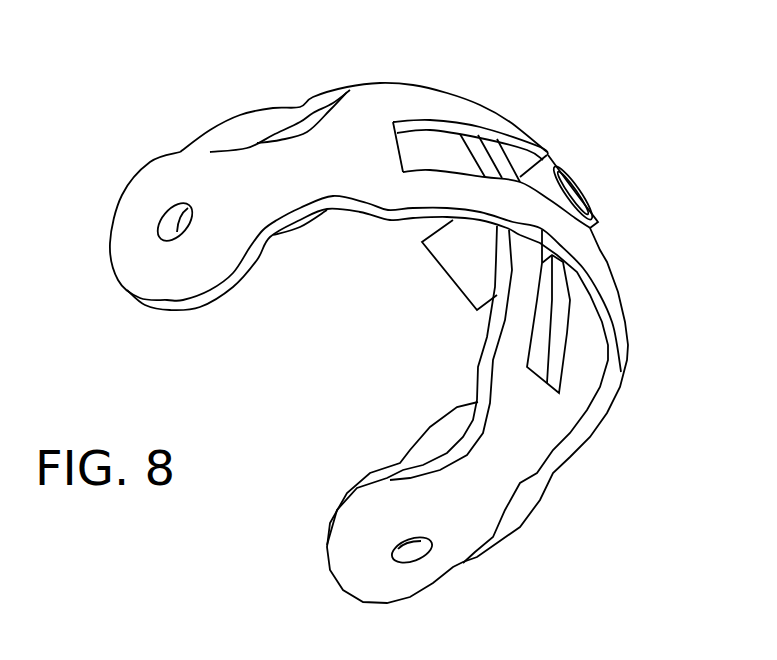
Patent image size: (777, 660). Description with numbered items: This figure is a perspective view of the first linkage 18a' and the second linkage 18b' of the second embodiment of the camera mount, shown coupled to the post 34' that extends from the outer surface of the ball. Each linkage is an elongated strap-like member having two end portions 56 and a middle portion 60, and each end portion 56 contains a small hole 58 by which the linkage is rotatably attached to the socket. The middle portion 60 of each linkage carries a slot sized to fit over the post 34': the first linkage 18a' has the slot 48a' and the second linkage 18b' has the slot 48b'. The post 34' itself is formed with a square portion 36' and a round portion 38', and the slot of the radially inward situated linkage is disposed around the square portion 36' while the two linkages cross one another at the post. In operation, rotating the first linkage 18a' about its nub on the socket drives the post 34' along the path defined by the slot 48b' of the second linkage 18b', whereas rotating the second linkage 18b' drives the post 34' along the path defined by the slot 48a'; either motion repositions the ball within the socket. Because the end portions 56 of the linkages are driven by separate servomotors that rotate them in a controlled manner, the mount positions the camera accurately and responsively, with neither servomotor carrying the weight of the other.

The first linkage 18a' is at (333, 231).
The second linkage 18b' is at (506, 414).
The post 34' is at (599, 175).
The square portion 36' is at (427, 274).
The round portion 38' is at (620, 191).
The slot of first linkage 48a' is at (476, 121).
The slot of second linkage 48b' is at (622, 311).
The end portion 56 is at (163, 278).
The small hole 58 is at (158, 226).
The middle portion 60 is at (488, 118).